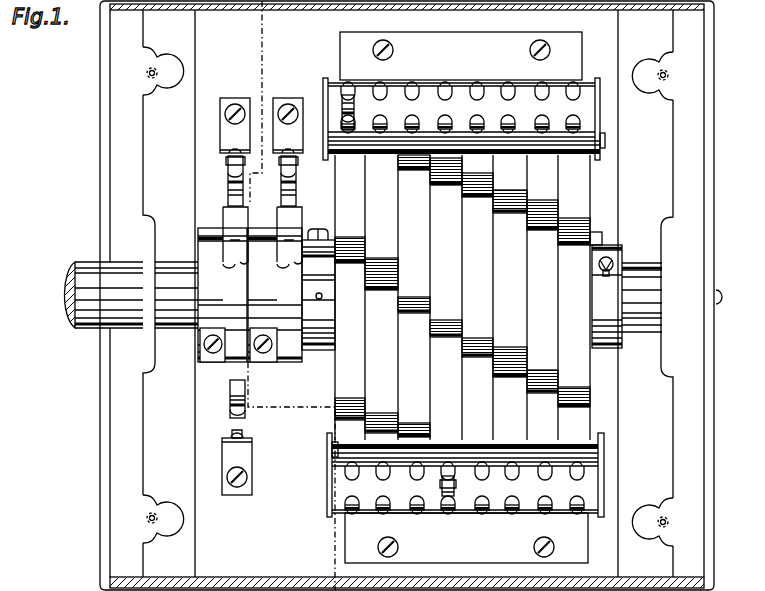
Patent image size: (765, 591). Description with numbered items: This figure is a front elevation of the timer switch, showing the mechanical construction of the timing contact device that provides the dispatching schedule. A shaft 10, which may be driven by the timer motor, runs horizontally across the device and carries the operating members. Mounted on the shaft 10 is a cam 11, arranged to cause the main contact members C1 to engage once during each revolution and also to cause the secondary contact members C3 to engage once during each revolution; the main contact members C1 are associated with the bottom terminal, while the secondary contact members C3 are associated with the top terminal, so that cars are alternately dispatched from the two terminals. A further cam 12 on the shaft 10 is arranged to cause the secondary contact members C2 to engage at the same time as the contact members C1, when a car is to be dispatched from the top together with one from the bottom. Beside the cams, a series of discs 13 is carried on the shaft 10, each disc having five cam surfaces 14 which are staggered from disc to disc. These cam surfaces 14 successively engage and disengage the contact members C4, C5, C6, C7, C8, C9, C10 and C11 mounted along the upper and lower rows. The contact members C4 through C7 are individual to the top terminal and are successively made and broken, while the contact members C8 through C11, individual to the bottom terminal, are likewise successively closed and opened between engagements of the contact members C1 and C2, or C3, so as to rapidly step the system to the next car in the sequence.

The shaft 10 is at (79, 262).
The cam 11 is at (225, 218).
The cam 12 is at (277, 218).
The discs 13 is at (333, 205).
The cam surfaces 14 is at (444, 311).
The main contact members C1 is at (230, 162).
The secondary contact members C2 is at (297, 163).
The secondary contact members C3 is at (232, 421).
The contact members C4 is at (352, 477).
The contact members C5 is at (383, 477).
The contact members C6 is at (417, 477).
The contact members C7 is at (456, 486).
The contact members C8 is at (355, 95).
The contact members C9 is at (384, 95).
The contact members C10 is at (414, 95).
The contact members C11 is at (447, 95).